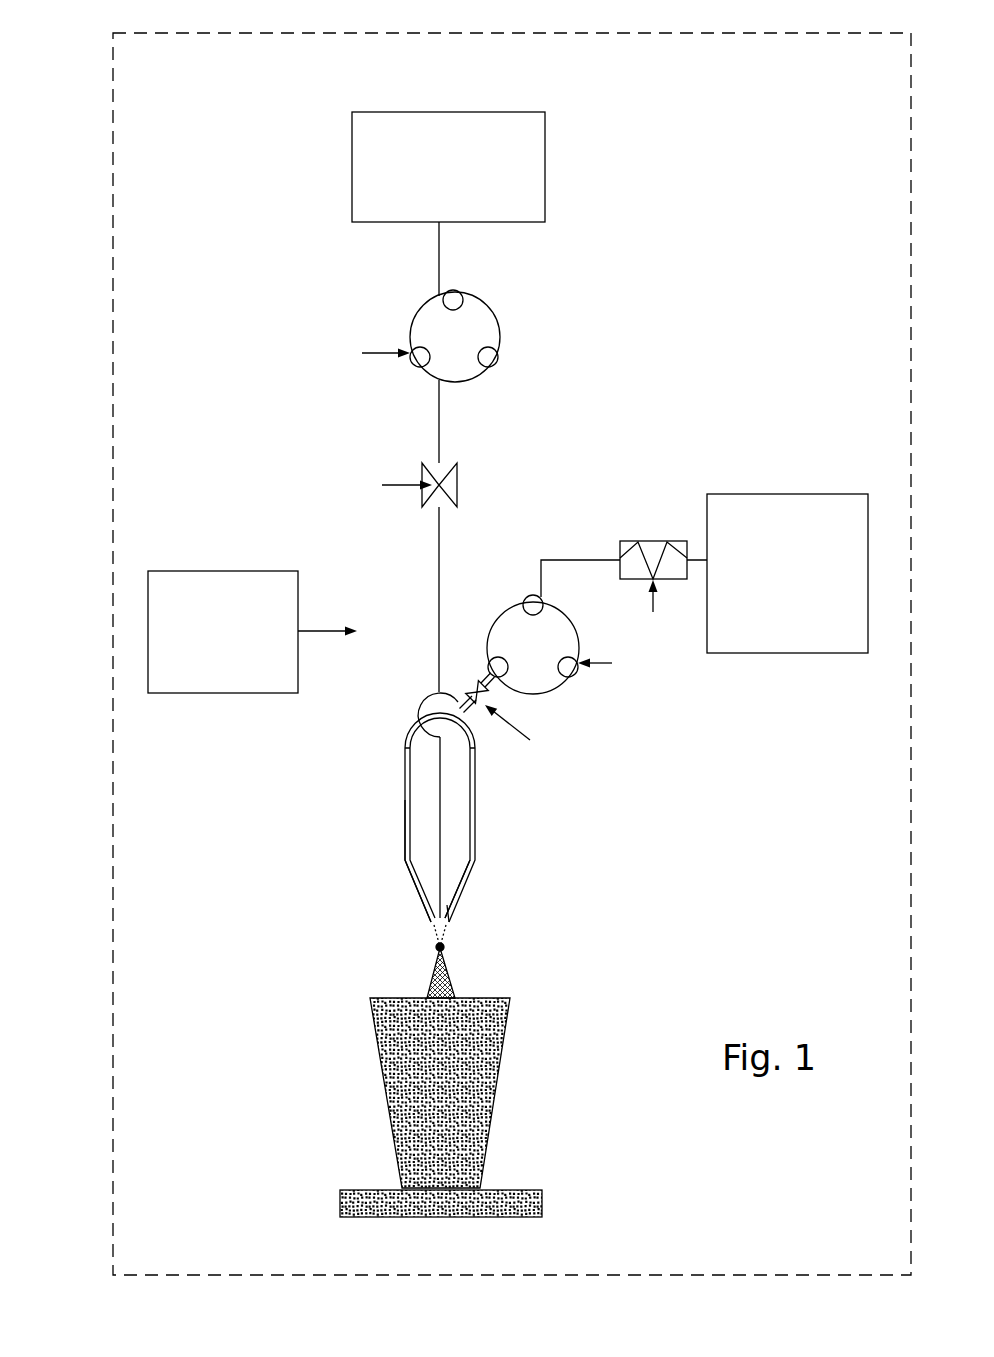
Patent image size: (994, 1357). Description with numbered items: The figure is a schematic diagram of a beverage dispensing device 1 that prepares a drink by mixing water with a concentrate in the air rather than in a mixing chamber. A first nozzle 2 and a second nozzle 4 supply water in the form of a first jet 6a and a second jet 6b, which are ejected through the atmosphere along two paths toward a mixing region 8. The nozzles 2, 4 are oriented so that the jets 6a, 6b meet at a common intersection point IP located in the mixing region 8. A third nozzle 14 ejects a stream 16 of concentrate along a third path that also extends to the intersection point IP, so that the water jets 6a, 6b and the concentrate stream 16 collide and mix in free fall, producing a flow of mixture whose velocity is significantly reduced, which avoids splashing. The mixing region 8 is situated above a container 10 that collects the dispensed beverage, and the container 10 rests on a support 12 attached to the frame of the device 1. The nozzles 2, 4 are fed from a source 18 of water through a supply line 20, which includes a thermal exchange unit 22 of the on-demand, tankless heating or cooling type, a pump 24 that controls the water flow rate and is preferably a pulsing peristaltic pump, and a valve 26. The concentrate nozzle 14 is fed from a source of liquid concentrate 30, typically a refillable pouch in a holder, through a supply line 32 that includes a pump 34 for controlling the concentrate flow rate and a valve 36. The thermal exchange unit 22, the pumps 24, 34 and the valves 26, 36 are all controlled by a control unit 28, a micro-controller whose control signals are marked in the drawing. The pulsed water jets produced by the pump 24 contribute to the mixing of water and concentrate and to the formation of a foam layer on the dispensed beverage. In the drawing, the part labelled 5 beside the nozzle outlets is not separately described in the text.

The beverage dispensing device 1 is at (95, 30).
The first nozzle 2 is at (418, 898).
The second nozzle 4 is at (463, 885).
The outlet opening 5 is at (452, 895).
The first jet 6a is at (430, 927).
The second jet 6b is at (448, 927).
The mixing region 8 is at (420, 950).
The container 10 is at (386, 1097).
The support 12 is at (340, 1207).
The third nozzle 14 is at (462, 868).
The stream of concentrate 16 is at (418, 892).
The source of liquid 18 is at (759, 480).
The supply line 20 is at (549, 540).
The thermal exchange unit 22 is at (650, 528).
The pump 24 is at (568, 695).
The valve 26 is at (430, 692).
The control unit 28 is at (210, 585).
The source of liquid concentrate 30 is at (342, 140).
The supply line 32 is at (420, 568).
The pump 34 is at (406, 298).
The valve 36 is at (427, 455).
The intersection point IP is at (443, 950).